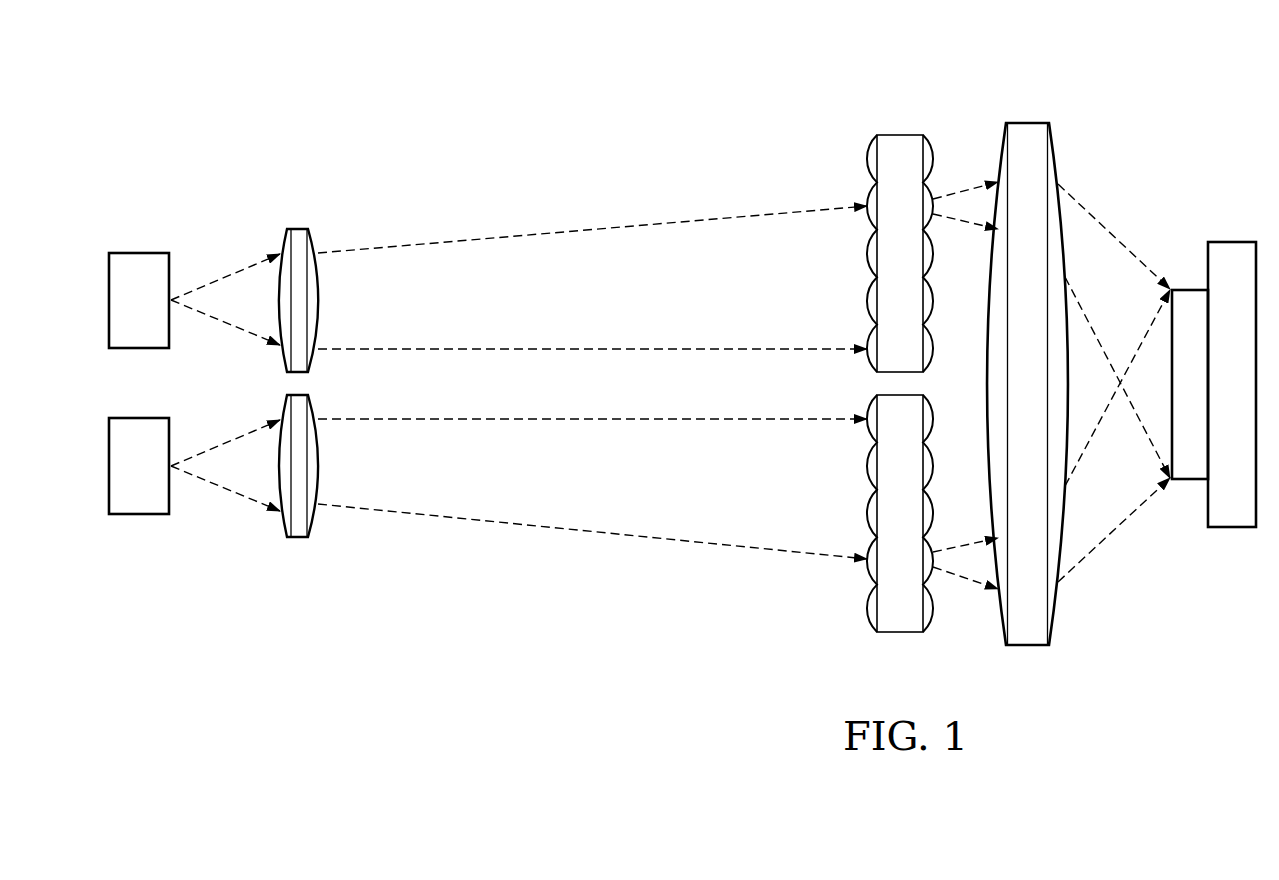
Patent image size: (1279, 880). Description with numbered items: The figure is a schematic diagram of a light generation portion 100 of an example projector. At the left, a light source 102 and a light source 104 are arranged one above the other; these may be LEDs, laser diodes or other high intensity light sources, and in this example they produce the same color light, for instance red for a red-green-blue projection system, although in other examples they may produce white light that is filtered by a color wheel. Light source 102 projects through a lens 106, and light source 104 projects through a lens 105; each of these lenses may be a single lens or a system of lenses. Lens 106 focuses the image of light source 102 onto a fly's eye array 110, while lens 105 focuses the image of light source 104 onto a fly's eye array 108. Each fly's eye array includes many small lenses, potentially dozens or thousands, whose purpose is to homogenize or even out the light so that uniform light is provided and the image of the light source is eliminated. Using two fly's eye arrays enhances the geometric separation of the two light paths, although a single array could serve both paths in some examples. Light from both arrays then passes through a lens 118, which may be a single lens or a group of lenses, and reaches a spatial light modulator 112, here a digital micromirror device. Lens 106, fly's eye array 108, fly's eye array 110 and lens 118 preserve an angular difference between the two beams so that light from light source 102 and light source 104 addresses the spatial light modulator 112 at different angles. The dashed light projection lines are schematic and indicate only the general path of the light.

The light generation portion 100 is at (357, 101).
The light source 102 is at (138, 252).
The light source 104 is at (138, 514).
The lens 105 is at (298, 537).
The lens 106 is at (298, 229).
The fly's eye array 108 is at (900, 633).
The fly's eye array 110 is at (900, 135).
The spatial light modulator 112 is at (1230, 242).
The lens 118 is at (1027, 123).